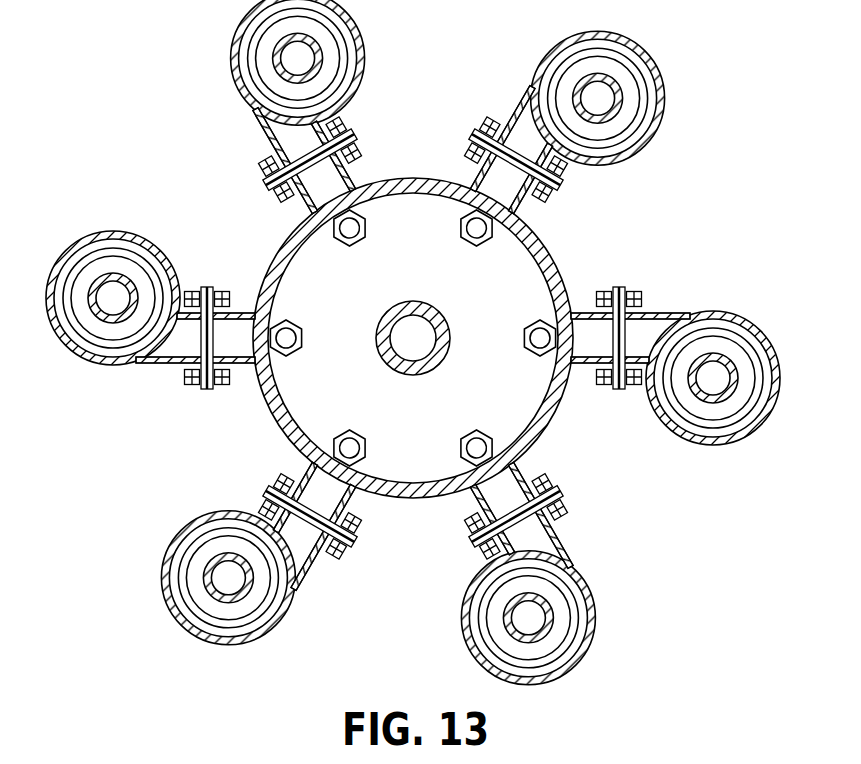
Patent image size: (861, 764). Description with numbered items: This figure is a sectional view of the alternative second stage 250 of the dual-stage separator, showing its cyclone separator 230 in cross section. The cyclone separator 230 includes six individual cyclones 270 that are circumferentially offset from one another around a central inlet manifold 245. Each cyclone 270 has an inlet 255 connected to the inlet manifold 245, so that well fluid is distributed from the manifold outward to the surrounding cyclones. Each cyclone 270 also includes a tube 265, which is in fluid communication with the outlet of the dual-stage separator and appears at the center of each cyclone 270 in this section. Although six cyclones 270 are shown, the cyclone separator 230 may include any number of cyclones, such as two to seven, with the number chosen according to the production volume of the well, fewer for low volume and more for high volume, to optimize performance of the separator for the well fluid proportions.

The cyclone separator 230 is at (604, 462).
The inlet manifold 245 is at (480, 298).
The second stage 250 is at (624, 613).
The inlet 255 is at (567, 328).
The tube 265 is at (714, 356).
The cyclone 270 is at (740, 380).